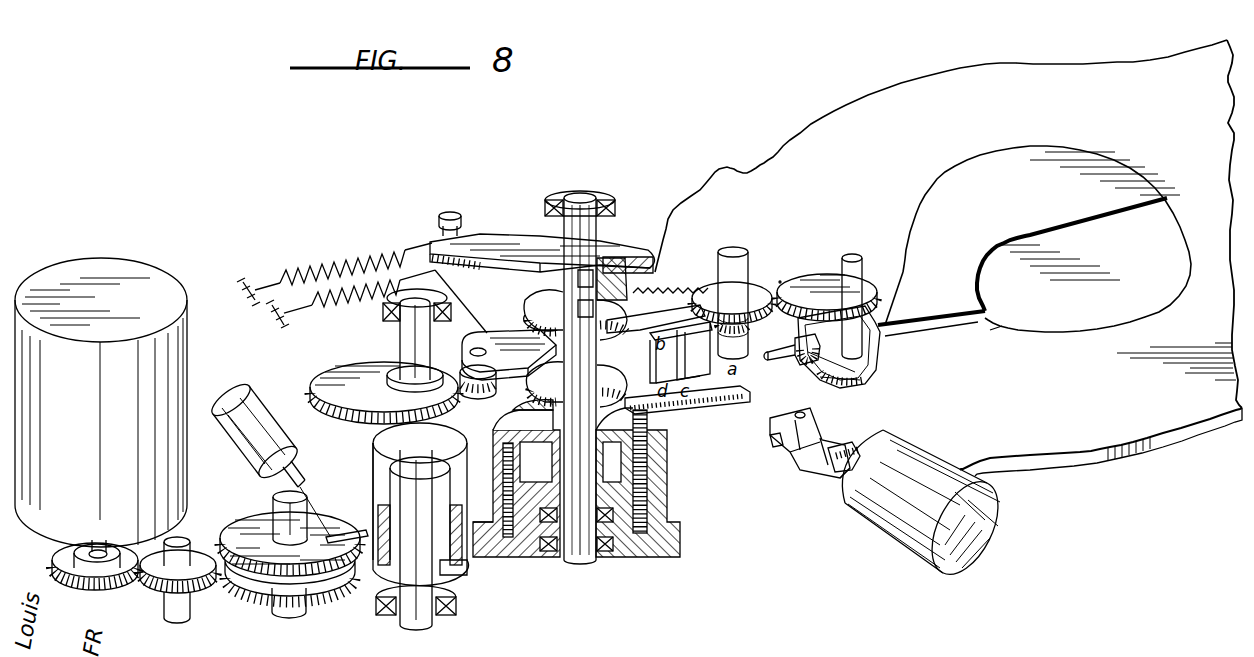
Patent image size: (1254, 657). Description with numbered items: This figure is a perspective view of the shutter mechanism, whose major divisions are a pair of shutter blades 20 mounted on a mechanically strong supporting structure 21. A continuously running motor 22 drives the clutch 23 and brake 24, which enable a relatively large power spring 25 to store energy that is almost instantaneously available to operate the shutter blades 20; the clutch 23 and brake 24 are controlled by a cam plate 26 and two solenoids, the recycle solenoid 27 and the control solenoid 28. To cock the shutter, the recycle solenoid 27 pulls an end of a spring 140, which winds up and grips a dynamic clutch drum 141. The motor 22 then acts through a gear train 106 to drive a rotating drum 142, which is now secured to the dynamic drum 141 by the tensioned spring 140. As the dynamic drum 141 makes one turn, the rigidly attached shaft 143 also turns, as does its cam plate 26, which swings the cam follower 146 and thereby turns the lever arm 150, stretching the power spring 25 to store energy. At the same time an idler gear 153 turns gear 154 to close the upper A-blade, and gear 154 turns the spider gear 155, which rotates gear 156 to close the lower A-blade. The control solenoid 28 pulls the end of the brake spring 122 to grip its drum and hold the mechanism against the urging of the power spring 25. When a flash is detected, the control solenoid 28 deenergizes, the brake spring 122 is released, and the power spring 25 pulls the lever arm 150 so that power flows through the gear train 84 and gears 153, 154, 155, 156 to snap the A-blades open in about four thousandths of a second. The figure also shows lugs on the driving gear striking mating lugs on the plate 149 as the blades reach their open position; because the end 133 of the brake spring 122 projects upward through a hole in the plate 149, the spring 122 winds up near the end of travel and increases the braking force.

The shutter blades 20 is at (1092, 216).
The supporting structure 21 is at (1112, 114).
The continuously running motor 22 is at (120, 268).
The clutch 23 is at (610, 560).
The brake 24 is at (378, 443).
The power spring 25 is at (330, 262).
The cam plate 26 is at (372, 400).
The recycle solenoid 27 is at (232, 395).
The control solenoid 28 is at (978, 528).
The gear train 84 is at (790, 258).
The gear train 106 is at (252, 656).
The brake spring 122 is at (652, 542).
The end of brake spring 133 is at (672, 400).
The spring 140 is at (350, 530).
The dynamic clutch drum 141 is at (416, 494).
The rotating drum 142 is at (470, 565).
The shaft 143 is at (398, 345).
The cam follower 146 is at (656, 315).
The plate 149 is at (760, 410).
The lever arm 150 is at (497, 235).
The idler gear 153 is at (700, 278).
The gear 154 is at (825, 268).
The spider gear 155 is at (790, 336).
The gear 156 is at (828, 388).